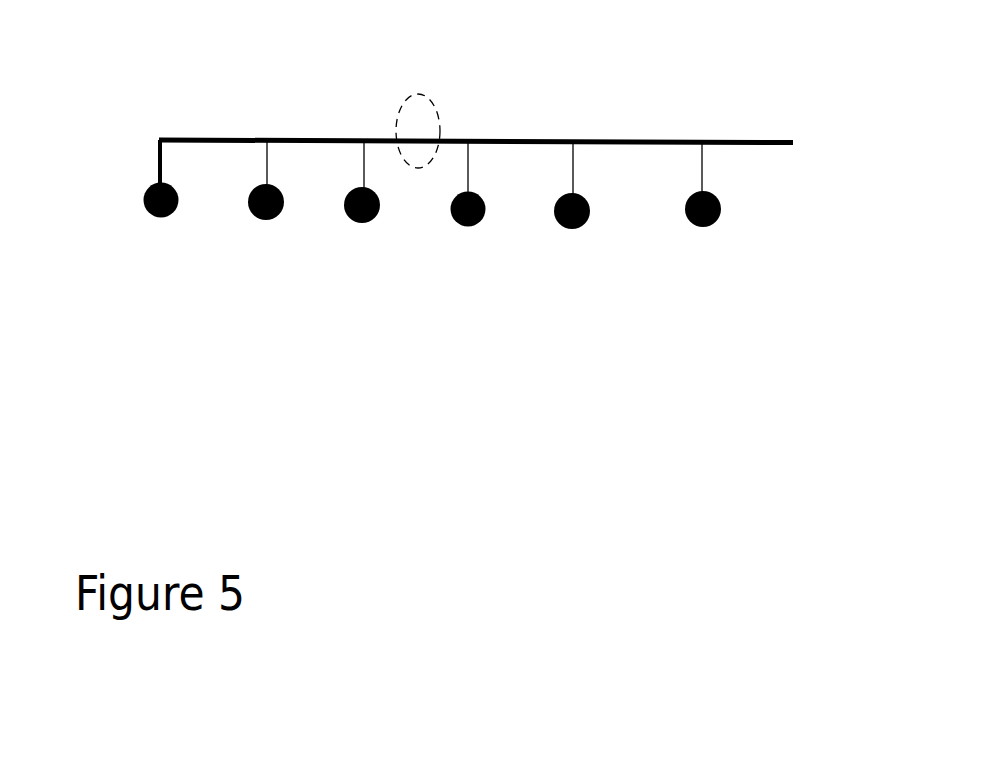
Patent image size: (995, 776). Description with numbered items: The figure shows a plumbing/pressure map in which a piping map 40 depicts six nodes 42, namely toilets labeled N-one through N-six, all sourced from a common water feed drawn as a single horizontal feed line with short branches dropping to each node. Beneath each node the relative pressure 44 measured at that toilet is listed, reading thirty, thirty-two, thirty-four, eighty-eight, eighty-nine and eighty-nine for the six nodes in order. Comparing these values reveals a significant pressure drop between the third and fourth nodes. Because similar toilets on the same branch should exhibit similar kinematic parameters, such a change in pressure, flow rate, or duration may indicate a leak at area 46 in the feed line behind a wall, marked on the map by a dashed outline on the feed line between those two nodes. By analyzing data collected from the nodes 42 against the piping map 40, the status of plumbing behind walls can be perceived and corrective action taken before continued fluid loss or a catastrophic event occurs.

The piping map 40 is at (624, 86).
The nodes 42 is at (111, 193).
The relative pressure 44 is at (758, 267).
The area 46 is at (412, 94).